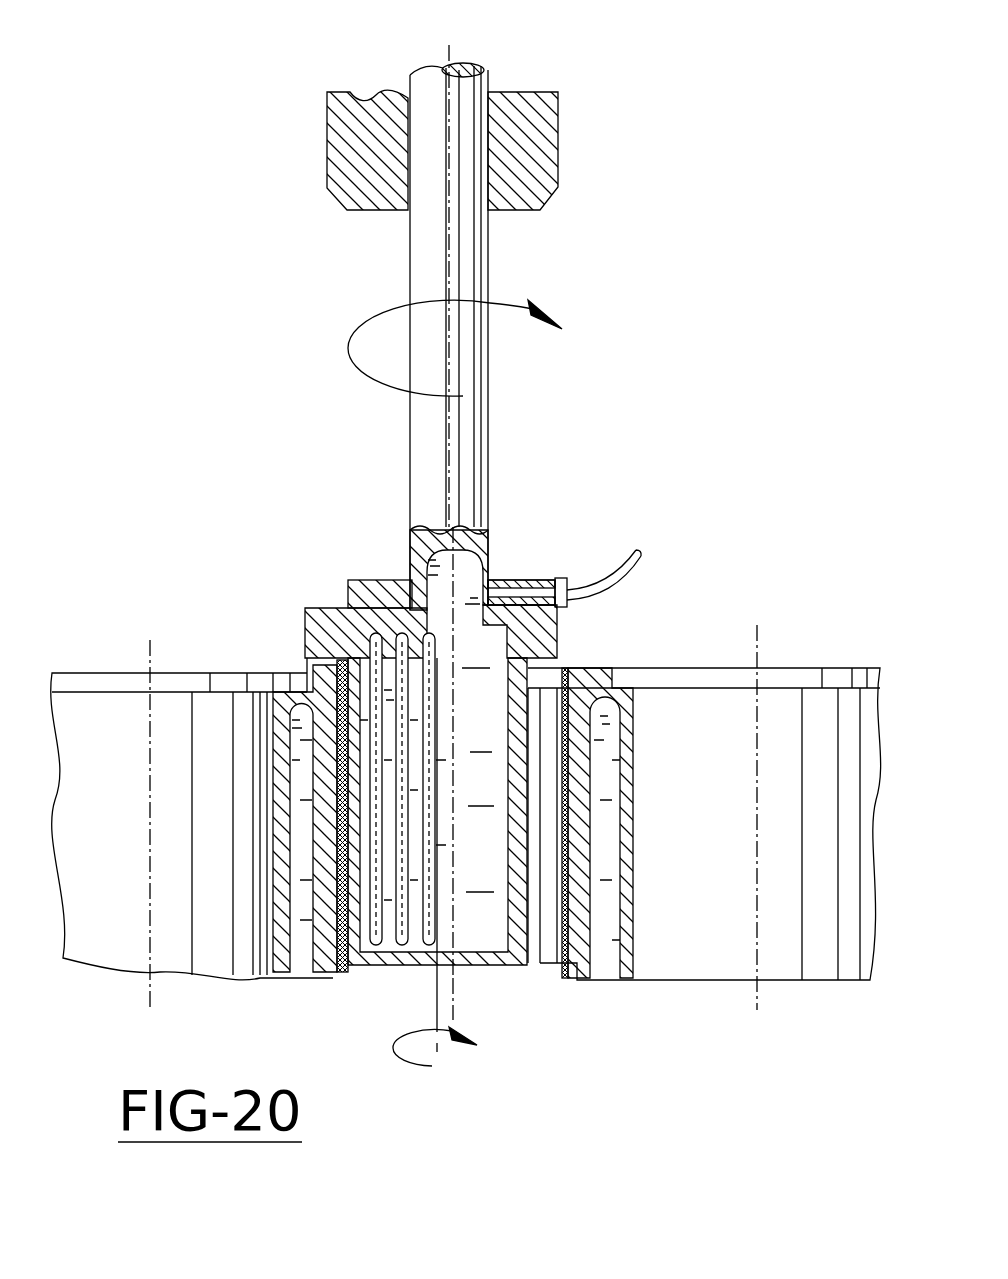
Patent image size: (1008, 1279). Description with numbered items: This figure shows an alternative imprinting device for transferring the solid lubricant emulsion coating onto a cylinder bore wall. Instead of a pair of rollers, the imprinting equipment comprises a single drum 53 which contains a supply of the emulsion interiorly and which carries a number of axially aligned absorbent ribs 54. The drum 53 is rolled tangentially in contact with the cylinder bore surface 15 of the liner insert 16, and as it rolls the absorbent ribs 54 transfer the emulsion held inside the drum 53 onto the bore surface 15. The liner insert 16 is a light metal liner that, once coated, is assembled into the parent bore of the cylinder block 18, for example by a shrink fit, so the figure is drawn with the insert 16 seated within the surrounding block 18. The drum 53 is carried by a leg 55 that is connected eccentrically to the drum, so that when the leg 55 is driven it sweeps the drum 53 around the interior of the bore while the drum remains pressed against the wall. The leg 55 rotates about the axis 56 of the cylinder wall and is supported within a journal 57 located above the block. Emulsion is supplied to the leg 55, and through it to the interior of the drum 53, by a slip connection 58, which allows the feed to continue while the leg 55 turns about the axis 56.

The cylinder bore surface 15 is at (563, 724).
The liner insert 16 is at (310, 778).
The cylinder block 18 is at (620, 697).
The drum 53 is at (362, 626).
The absorbent ribs 54 is at (383, 948).
The leg 55 is at (471, 487).
The axis of the cylinder wall 56 is at (458, 64).
The journal 57 is at (540, 153).
The slip connection 58 is at (510, 580).